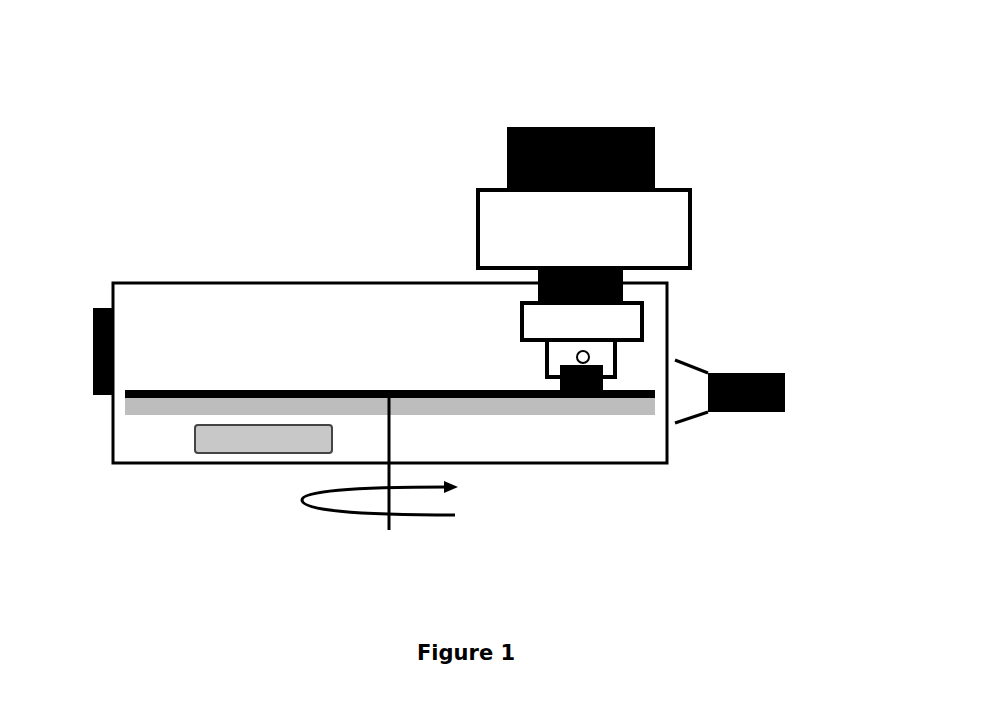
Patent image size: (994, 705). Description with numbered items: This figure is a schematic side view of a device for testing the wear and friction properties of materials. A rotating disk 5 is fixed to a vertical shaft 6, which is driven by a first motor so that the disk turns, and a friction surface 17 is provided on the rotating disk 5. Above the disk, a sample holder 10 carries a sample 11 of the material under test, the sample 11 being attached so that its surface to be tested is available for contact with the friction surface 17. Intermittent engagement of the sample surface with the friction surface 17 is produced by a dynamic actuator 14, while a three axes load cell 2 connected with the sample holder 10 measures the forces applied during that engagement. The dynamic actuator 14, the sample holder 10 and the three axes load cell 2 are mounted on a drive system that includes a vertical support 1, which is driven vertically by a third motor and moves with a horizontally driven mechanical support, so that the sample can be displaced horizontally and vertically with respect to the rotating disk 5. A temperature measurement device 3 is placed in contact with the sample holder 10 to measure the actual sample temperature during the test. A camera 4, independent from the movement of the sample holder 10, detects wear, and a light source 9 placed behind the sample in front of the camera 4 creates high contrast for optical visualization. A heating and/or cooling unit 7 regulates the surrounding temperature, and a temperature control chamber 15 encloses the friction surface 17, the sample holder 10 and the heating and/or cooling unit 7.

The vertical support 1 is at (627, 127).
The dynamic actuator 14 is at (645, 228).
The three axes load cell 2 is at (620, 323).
The temperature measurement device 3 is at (598, 357).
The sample holder 10 is at (546, 363).
The sample 11 is at (557, 383).
The temperature control chamber 15 is at (248, 292).
The light source 9 is at (116, 355).
The friction surface 17 is at (121, 402).
The rotating disk 5 is at (490, 410).
The heating and/or cooling unit 7 is at (283, 443).
The vertical shaft 6 is at (380, 487).
The camera 4 is at (792, 391).